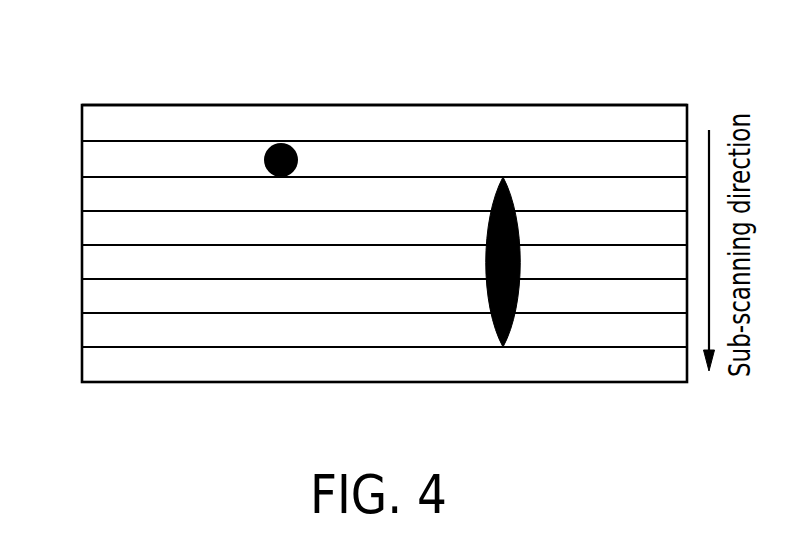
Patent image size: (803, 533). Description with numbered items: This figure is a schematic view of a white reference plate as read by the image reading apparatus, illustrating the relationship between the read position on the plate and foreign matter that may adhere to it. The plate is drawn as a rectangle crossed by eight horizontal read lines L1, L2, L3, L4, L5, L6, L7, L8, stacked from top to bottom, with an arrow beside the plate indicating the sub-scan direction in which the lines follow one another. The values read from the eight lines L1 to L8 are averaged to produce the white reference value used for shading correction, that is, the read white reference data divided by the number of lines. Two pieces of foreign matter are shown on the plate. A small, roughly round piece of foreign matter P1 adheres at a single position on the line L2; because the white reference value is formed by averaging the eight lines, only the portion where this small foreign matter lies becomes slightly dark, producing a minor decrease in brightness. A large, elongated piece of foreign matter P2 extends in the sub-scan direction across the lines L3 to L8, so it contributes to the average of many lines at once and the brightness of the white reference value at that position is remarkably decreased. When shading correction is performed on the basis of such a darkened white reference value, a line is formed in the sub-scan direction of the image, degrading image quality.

The foreign matter P1 is at (290, 143).
The foreign matter P2 is at (503, 178).
The line L1 is at (357, 104).
The line L2 is at (357, 140).
The line L3 is at (357, 176).
The line L4 is at (357, 210).
The line L5 is at (357, 244).
The line L6 is at (357, 278).
The line L7 is at (357, 312).
The line L8 is at (357, 346).